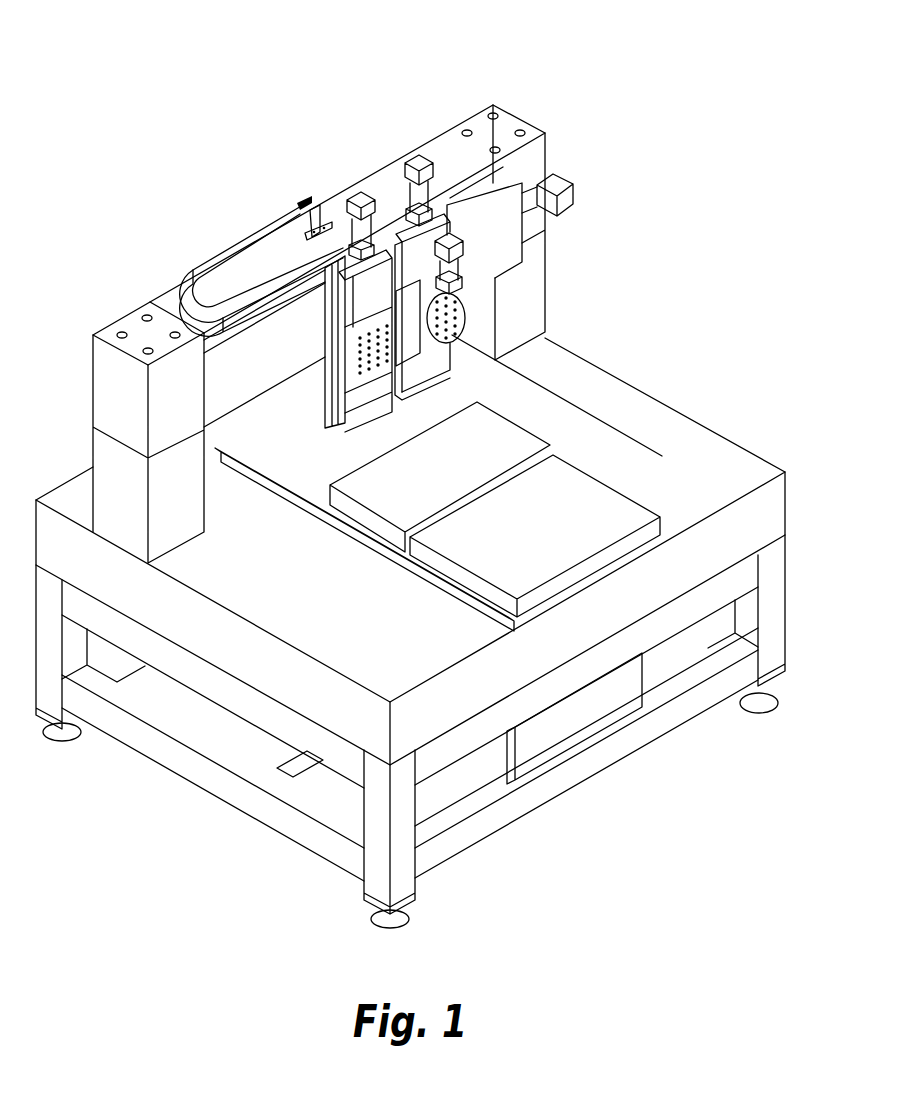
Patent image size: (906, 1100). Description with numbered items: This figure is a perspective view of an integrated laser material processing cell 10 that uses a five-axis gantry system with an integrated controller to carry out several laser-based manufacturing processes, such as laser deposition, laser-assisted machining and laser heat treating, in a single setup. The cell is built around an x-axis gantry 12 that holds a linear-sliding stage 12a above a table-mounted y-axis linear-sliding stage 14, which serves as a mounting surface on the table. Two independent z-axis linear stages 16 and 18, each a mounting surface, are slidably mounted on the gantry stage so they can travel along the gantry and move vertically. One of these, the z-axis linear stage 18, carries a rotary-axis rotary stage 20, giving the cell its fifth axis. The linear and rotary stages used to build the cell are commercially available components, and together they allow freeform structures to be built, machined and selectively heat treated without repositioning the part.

The integrated laser material processing cell 10 is at (186, 92).
The x-axis gantry 12 is at (473, 152).
The linear-sliding stage 12a is at (507, 225).
The table-mounted y-axis linear-sliding stage 14 is at (477, 440).
The z-axis linear stage 16 is at (350, 348).
The z-axis linear stage 18 is at (407, 307).
The rotary-axis rotary stage 20 is at (462, 306).